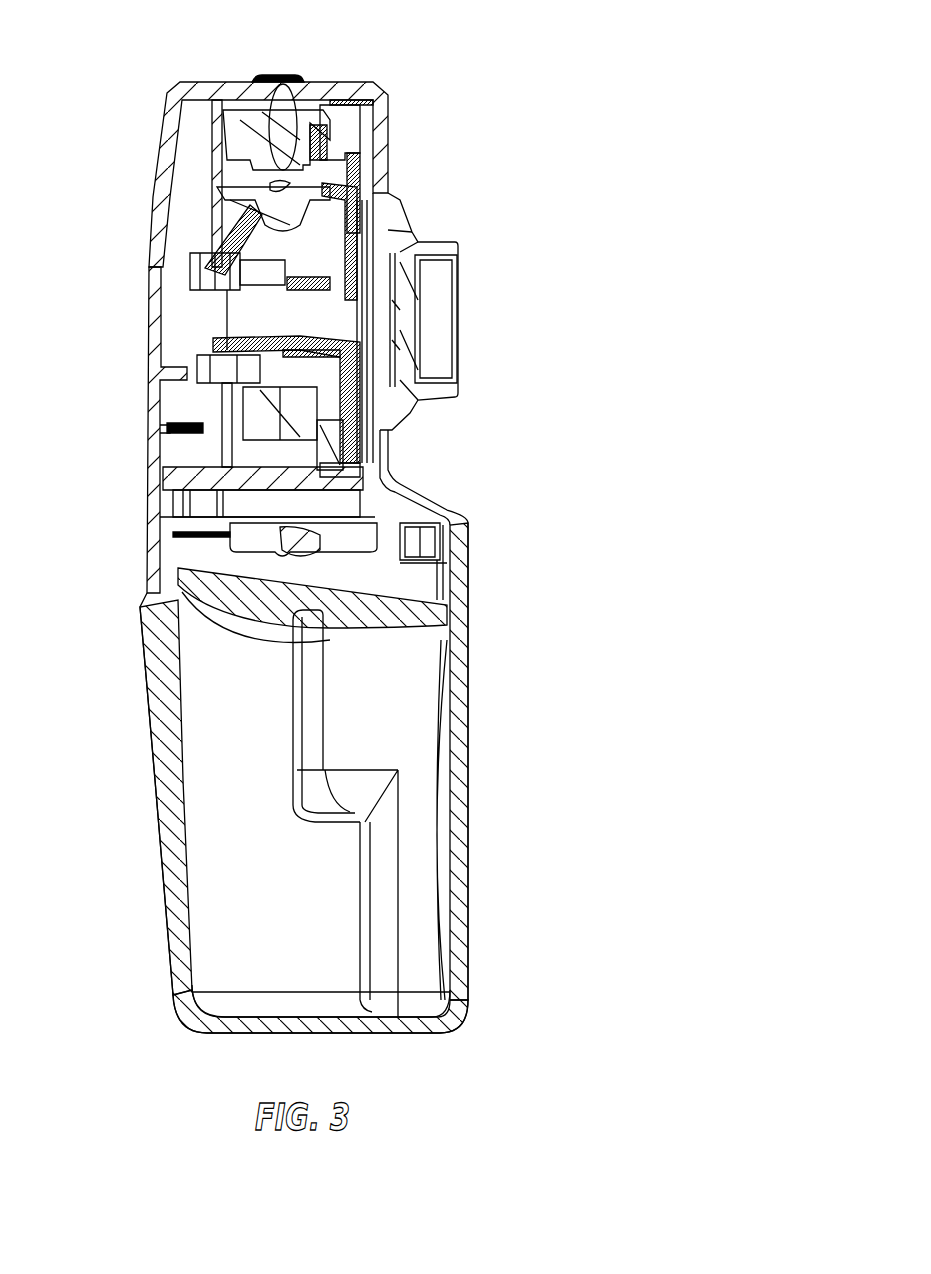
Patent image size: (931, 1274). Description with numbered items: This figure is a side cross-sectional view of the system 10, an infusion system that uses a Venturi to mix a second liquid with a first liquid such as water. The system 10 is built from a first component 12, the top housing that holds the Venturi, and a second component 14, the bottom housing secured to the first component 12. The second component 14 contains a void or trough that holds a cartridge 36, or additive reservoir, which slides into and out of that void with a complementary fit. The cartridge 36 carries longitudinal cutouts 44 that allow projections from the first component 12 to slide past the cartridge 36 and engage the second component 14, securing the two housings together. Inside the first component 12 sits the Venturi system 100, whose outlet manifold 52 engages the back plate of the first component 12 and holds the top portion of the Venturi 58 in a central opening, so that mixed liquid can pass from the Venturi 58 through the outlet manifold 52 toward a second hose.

The system 10 is at (534, 116).
The first component 12 is at (160, 201).
The second component 14 is at (160, 793).
The cartridge 36 is at (230, 900).
The cutouts 44 is at (385, 790).
The outlet manifold 52 is at (377, 203).
The Venturi 58 is at (280, 317).
The Venturi system 100 is at (360, 410).